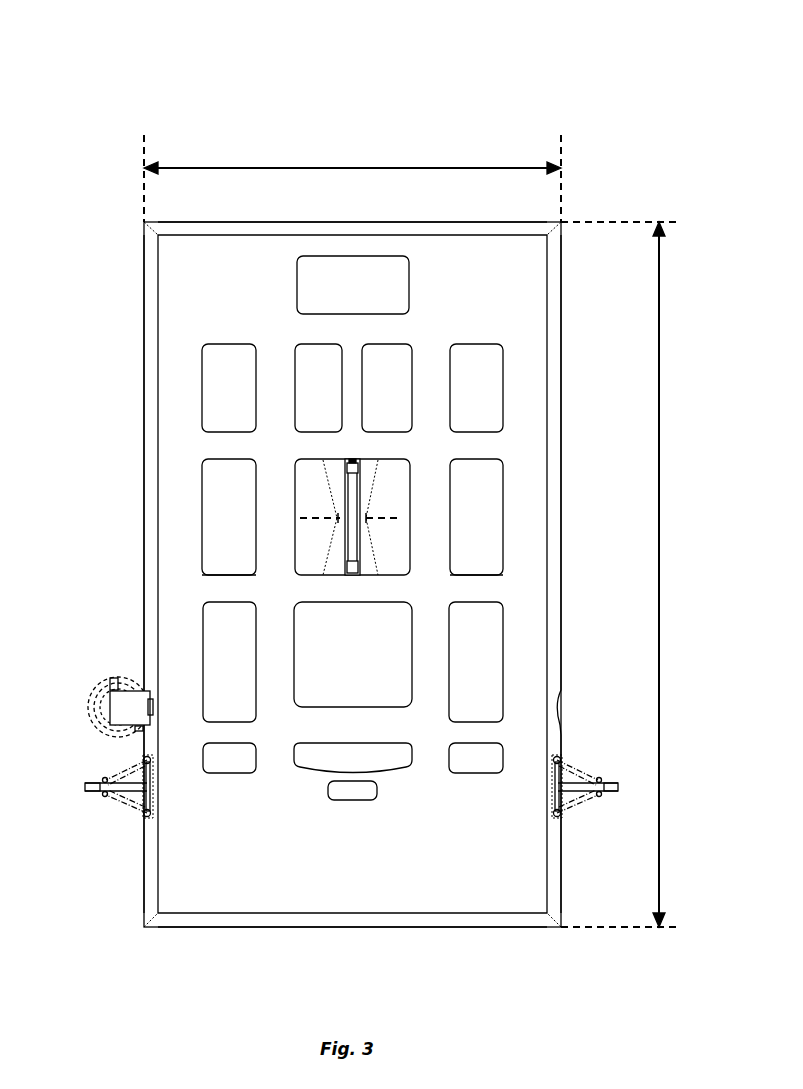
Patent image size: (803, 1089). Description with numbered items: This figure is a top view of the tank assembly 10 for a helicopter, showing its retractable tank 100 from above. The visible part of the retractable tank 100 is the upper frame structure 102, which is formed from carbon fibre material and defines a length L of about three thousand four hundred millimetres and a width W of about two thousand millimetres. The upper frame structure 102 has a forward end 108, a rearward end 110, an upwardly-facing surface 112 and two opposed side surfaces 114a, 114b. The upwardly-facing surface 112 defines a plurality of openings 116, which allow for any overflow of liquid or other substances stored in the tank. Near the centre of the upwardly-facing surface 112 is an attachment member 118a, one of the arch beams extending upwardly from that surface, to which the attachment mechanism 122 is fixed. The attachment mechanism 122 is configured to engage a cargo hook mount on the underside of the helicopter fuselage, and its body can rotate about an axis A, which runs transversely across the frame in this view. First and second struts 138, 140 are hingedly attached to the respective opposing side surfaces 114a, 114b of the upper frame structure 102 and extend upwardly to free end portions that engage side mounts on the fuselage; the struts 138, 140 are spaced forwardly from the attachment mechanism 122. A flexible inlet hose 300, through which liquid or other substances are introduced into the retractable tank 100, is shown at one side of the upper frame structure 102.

The tank assembly 10 is at (92, 67).
The retractable tank 100 is at (136, 912).
The upper frame structure 102 is at (538, 483).
The forward end 108 is at (455, 918).
The rearward end 110 is at (351, 228).
The upwardly-facing surface 112 is at (530, 364).
The side surface 114a is at (152, 270).
The side surface 114b is at (556, 271).
The openings 116 is at (217, 375).
The attachment member 118a is at (608, 600).
The attachment mechanism 122 is at (338, 483).
The first strut 138 is at (85, 791).
The second strut 140 is at (615, 789).
The flexible inlet hose 300 is at (100, 702).
The axis A is at (300, 518).
The width W is at (349, 168).
The length L is at (660, 540).